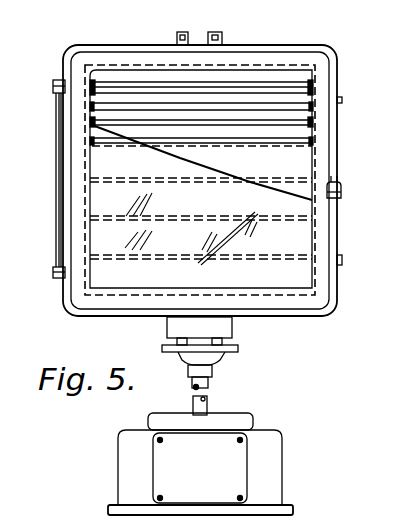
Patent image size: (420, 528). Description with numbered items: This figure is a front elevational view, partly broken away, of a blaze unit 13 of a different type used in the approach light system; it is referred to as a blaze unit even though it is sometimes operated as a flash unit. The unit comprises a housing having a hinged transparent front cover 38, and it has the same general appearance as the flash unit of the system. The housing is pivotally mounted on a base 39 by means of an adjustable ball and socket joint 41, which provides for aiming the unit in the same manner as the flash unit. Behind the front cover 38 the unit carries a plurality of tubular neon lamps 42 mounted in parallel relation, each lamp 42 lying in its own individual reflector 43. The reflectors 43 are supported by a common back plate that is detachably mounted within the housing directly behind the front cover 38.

The blaze unit 13 is at (215, 170).
The hinged transparent front cover 38 is at (327, 242).
The base 39 is at (270, 462).
The adjustable ball and socket joint 41 is at (225, 354).
The tubular neon lamps 42 is at (280, 86).
The individual reflectors 43 is at (311, 117).